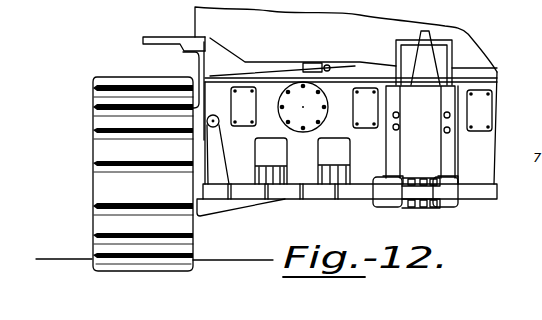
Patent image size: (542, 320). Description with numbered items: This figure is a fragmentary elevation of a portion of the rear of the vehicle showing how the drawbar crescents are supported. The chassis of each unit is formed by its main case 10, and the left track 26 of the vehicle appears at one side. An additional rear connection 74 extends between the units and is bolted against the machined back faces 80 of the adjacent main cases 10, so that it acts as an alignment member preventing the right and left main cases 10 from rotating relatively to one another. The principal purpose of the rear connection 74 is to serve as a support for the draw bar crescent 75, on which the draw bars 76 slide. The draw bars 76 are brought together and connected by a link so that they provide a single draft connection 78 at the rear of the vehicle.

The main case 10 is at (285, 130).
The left track 26 is at (92, 157).
The rear connection 74 is at (438, 110).
The draw bar crescent 75 is at (363, 200).
The draw bar 76 is at (392, 210).
The single draft connection 78 is at (430, 208).
The machined back face 80 is at (490, 155).